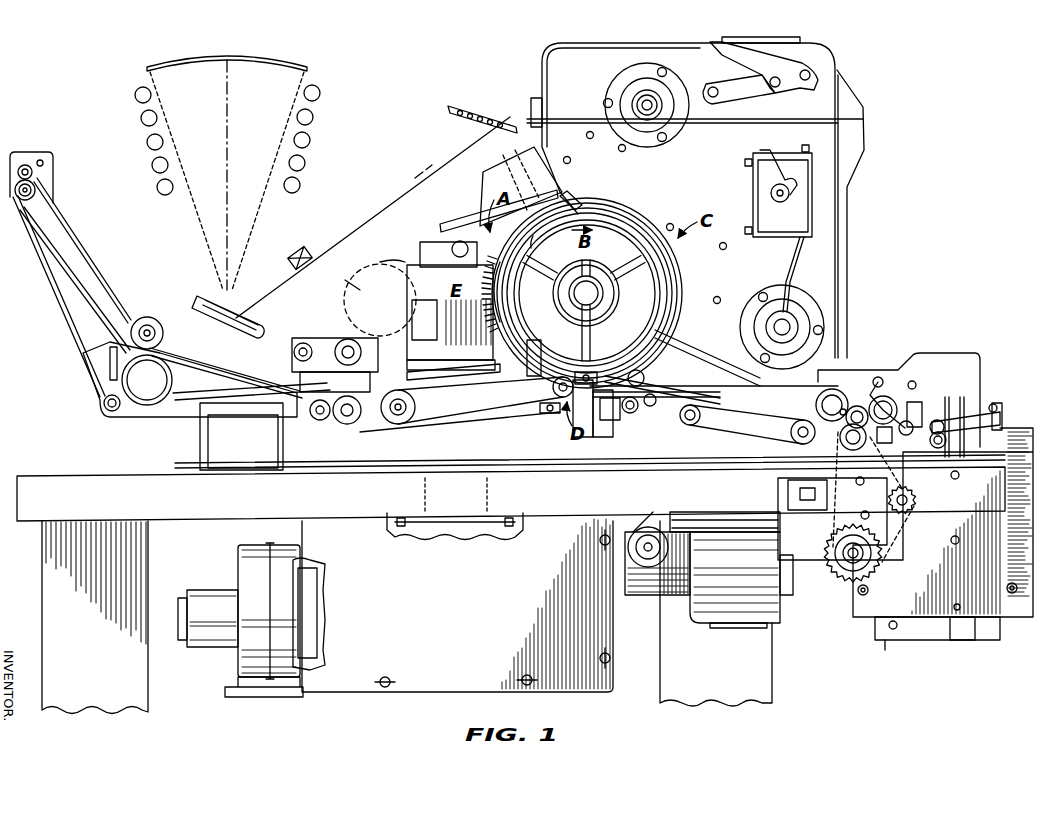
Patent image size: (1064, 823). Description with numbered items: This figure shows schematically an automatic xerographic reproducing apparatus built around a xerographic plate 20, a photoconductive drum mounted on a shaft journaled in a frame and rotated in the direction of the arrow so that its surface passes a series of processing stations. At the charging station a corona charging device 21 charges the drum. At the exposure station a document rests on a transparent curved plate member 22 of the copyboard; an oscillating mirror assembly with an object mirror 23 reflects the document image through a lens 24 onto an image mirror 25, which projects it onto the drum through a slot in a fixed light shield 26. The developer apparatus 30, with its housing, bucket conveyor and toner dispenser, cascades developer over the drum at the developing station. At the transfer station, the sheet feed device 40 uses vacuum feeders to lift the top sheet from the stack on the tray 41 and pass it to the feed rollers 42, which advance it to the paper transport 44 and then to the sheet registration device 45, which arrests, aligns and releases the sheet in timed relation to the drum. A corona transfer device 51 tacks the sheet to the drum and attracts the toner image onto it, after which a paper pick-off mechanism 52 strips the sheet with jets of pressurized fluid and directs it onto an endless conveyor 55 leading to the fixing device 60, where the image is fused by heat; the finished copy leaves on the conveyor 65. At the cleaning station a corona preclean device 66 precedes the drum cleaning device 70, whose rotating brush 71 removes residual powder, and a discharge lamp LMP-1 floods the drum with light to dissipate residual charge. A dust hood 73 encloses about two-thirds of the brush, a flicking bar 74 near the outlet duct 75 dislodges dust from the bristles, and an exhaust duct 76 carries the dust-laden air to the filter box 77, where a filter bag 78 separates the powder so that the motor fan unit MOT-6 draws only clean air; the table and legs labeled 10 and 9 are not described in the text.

The leg 9 is at (148, 663).
The table 10 is at (98, 476).
The xerographic plate 20 is at (682, 252).
The corona charging device 21 is at (530, 244).
The transparent curved plate member 22 is at (290, 62).
The object mirror 23 is at (212, 296).
The lens 24 is at (292, 250).
The image mirror 25 is at (470, 122).
The fixed light shield 26 is at (582, 201).
The developer apparatus 30 is at (850, 160).
The sheet feed device 40 is at (1031, 399).
The tray 41 is at (965, 640).
The feed rollers 42 is at (856, 455).
The paper transport 44 is at (712, 432).
The sheet registration device 45 is at (620, 421).
The corona transfer device 51 is at (579, 374).
The paper pick-off mechanism 52 is at (531, 345).
The endless conveyor 55 is at (497, 420).
The fixing device 60 is at (325, 328).
The conveyor 65 is at (73, 362).
The corona preclean device 66 is at (483, 363).
The drum cleaning device 70 is at (412, 248).
The rotating brush 71 is at (505, 292).
The dust hood 73 is at (430, 262).
The flicking bar 74 is at (412, 292).
The outlet duct 75 is at (384, 262).
The exhaust duct 76 is at (347, 282).
The filter box 77 is at (496, 690).
The filter bag 78 is at (505, 528).
The motor fan unit MOT-6 is at (224, 587).
The discharge lamp LMP-1 is at (455, 240).